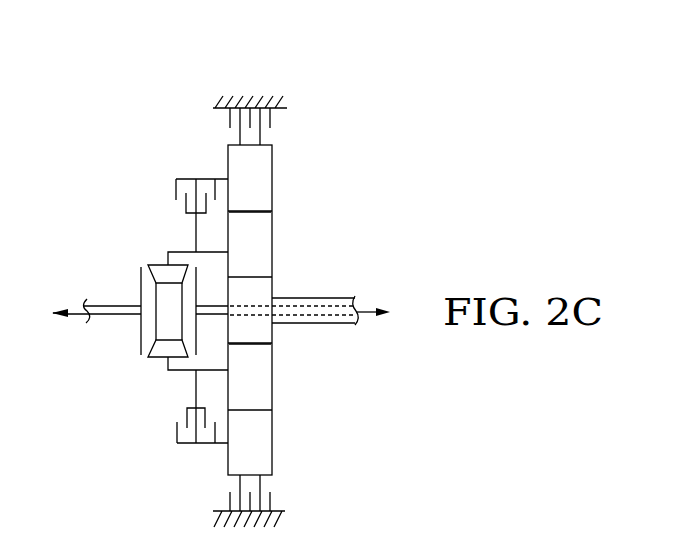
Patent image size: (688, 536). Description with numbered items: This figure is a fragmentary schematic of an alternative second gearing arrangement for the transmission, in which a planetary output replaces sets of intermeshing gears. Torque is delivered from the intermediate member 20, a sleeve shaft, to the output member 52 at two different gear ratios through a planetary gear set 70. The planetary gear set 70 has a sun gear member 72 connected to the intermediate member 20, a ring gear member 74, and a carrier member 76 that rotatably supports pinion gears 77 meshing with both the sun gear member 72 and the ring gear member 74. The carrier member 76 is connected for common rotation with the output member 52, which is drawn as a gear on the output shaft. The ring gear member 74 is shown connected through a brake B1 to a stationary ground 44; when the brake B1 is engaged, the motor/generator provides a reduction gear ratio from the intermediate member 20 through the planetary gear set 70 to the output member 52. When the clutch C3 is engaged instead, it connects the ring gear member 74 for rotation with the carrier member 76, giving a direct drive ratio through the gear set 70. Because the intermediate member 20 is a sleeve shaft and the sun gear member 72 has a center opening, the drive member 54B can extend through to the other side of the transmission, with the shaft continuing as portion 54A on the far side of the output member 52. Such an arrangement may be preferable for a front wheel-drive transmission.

The ground / stationary housing 44 is at (251, 98).
The brake B1 is at (300, 130).
The planetary gear set 70 is at (312, 298).
The ring gear member 74 is at (240, 192).
The pinion gears 77 is at (240, 259).
The clutch C3 is at (165, 158).
The carrier member 76 is at (182, 248).
The output member 52 is at (160, 263).
The shaft portion 54A is at (118, 316).
The drive member 54B is at (213, 318).
The sun gear member 72 is at (273, 292).
The intermediate member 20 is at (325, 298).